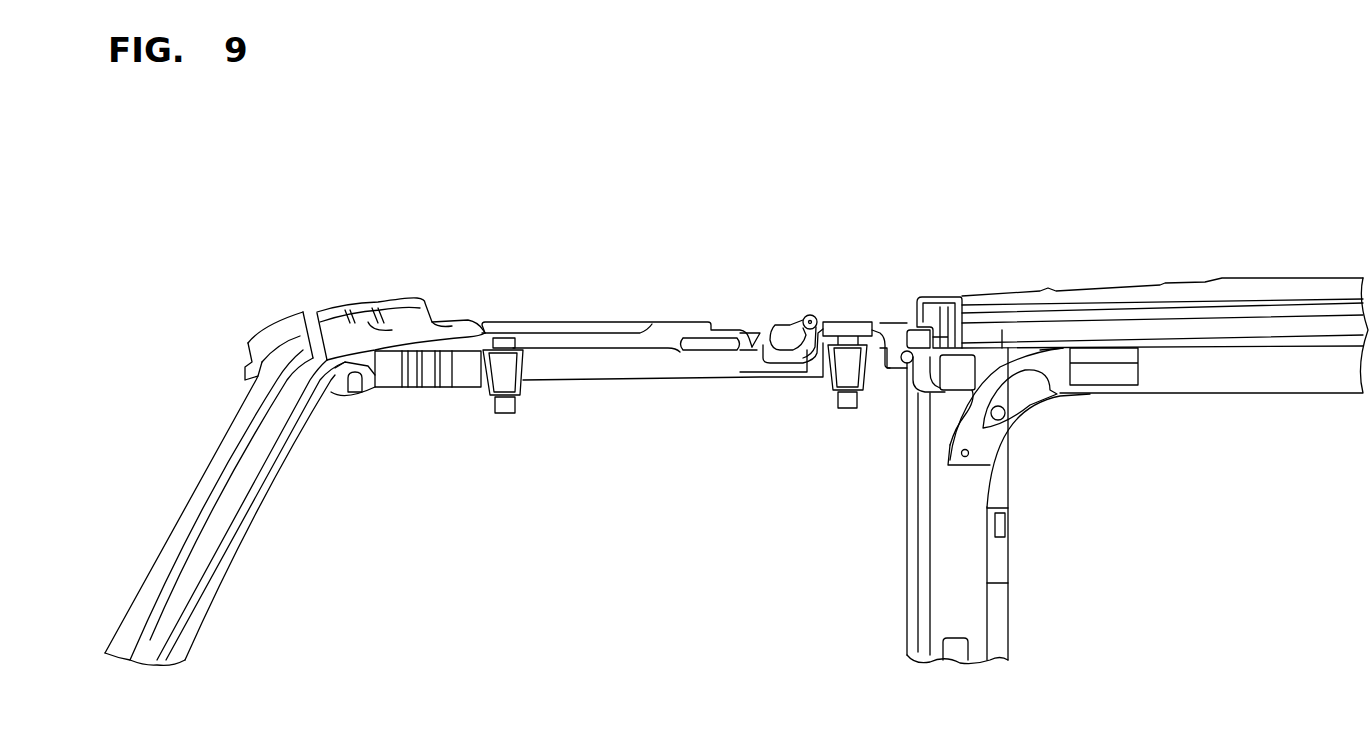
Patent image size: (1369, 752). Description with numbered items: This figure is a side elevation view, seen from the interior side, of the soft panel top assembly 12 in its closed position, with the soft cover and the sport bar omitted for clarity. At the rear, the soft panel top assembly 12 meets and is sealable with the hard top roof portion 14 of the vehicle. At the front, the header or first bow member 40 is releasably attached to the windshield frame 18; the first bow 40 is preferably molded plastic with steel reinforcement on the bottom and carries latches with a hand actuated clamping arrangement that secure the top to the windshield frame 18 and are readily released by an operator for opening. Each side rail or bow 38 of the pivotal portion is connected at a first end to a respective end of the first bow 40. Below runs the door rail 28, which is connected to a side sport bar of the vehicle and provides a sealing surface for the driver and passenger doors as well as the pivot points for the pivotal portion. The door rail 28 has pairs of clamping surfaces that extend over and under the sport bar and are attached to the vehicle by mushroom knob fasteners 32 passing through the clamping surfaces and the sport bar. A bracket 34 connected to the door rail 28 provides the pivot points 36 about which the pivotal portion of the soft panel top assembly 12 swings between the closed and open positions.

The soft panel top assembly 12 is at (537, 268).
The hard top roof portion 14 is at (1260, 266).
The windshield frame 18 is at (315, 312).
The door rail 28 is at (607, 372).
The mushroom knob fastener 32 is at (857, 322).
The bracket 34 is at (808, 358).
The pivot points 36 is at (799, 302).
The side rail or bow 38 is at (653, 330).
The header or first bow member 40 is at (340, 322).